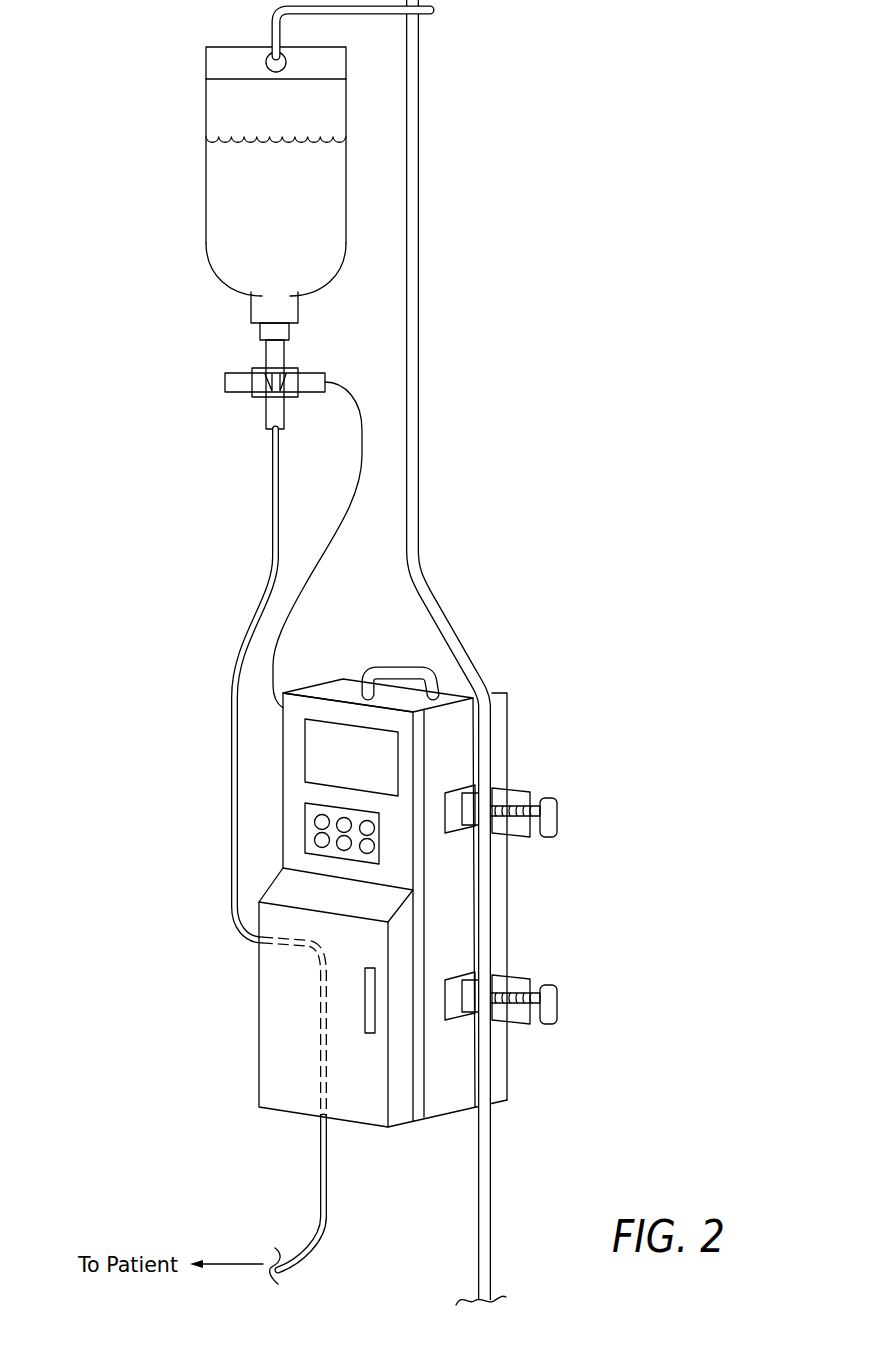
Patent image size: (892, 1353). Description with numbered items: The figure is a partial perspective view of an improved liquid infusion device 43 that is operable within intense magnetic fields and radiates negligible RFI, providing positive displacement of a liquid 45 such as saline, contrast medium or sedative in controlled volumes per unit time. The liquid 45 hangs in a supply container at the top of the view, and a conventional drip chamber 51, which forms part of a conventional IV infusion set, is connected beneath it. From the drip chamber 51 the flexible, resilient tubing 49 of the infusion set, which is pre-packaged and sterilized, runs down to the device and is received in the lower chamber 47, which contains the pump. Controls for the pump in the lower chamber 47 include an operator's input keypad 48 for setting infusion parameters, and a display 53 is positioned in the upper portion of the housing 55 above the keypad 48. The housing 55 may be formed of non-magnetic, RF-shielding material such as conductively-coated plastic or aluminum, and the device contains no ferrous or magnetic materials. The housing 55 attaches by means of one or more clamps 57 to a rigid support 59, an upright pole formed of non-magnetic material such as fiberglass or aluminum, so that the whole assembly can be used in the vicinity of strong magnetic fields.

The liquid infusion device 43 is at (336, 912).
The liquid 45 is at (223, 262).
The lower chamber 47 is at (258, 1050).
The operator's input keypad 48 is at (282, 748).
The flexible, resilient tubing 49 is at (230, 882).
The drip chamber 51 is at (263, 410).
The display 53 is at (312, 737).
The housing 55 is at (497, 693).
The clamps 57 is at (523, 838).
The rigid support 59 is at (418, 557).